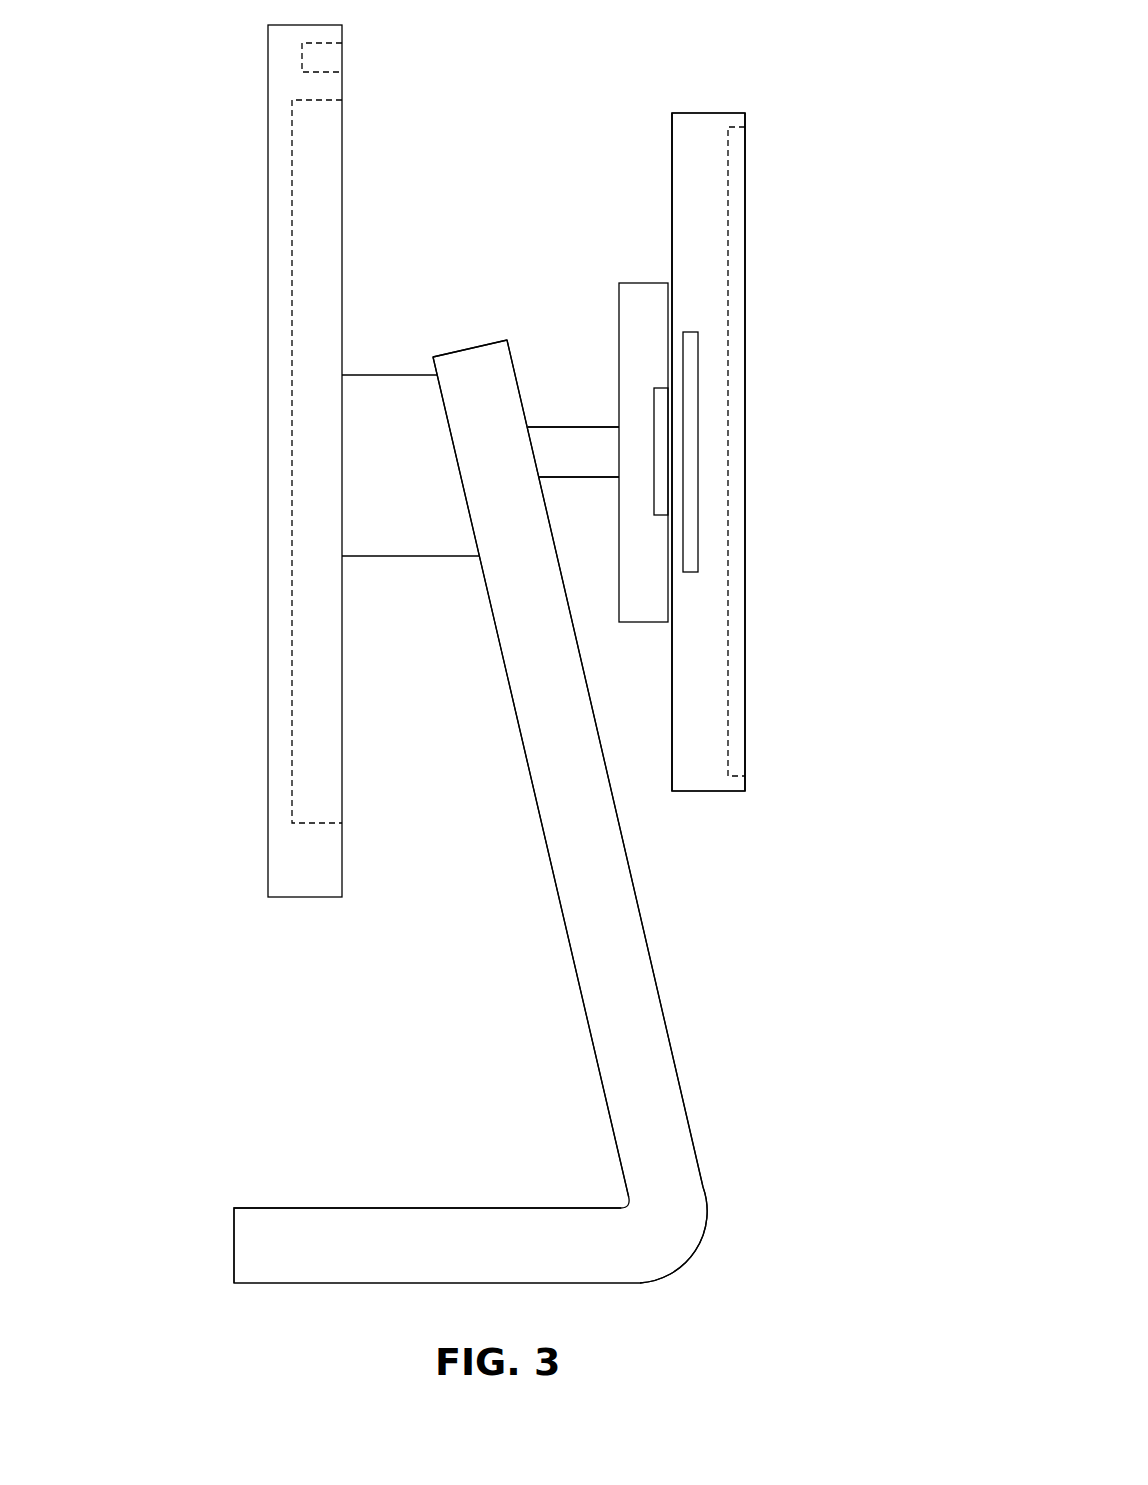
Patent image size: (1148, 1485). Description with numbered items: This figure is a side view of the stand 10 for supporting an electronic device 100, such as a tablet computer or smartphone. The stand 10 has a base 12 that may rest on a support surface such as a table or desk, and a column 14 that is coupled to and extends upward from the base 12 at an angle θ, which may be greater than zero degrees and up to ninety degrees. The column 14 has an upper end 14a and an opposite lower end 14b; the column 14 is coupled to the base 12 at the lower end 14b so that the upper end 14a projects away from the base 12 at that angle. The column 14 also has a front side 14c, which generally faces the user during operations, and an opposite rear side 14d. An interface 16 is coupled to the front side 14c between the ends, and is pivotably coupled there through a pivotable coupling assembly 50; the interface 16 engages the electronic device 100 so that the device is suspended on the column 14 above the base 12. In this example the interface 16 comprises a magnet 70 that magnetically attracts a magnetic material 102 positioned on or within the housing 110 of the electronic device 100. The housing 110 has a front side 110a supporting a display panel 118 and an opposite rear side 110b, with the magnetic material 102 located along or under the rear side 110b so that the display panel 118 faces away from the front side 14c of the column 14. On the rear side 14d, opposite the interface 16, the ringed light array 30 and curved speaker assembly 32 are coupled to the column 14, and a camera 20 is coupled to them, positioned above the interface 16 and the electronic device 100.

The stand 10 is at (214, 278).
The base 12 is at (357, 1208).
The column 14 is at (520, 733).
The upper end 14a is at (716, 1188).
The lower end 14b is at (470, 345).
The front side 14c is at (643, 899).
The rear side 14d is at (555, 903).
The interface 16 is at (640, 283).
The camera 20 is at (342, 56).
The ringed light array 30 is at (342, 860).
The curved speaker assembly 32 is at (342, 148).
The pivotable coupling assembly 50 is at (584, 479).
The magnet 70 is at (654, 405).
The electronic device 100 is at (756, 597).
The magnetic material 102 is at (698, 428).
The housing 110 is at (706, 113).
The front side 110a is at (756, 119).
The rear side 110b is at (666, 147).
The display panel 118 is at (747, 238).